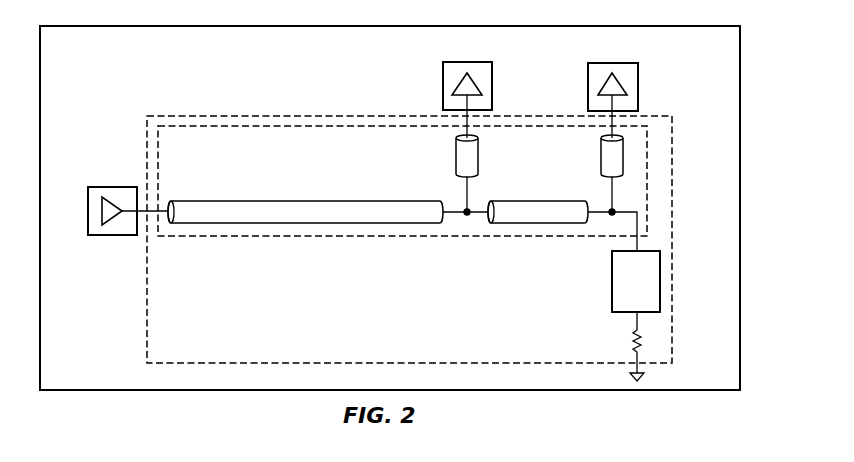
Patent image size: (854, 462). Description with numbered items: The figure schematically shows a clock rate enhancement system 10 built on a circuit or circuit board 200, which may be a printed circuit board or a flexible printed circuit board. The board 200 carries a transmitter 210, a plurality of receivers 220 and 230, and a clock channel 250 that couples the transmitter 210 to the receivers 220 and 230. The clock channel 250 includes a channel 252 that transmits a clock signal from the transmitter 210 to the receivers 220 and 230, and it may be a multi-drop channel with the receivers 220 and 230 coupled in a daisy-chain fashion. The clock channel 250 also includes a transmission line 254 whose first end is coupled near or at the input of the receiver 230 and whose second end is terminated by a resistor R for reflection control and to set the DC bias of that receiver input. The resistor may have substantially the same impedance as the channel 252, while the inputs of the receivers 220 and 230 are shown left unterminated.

The clock rate enhancement system 10 is at (761, 48).
The circuit board 200 is at (677, 103).
The transmitter 210 is at (112, 187).
The receiver 220 is at (468, 62).
The receiver 230 is at (612, 63).
The clock channel 250 is at (305, 115).
The channel 252 is at (305, 237).
The transmission line 254 is at (612, 280).